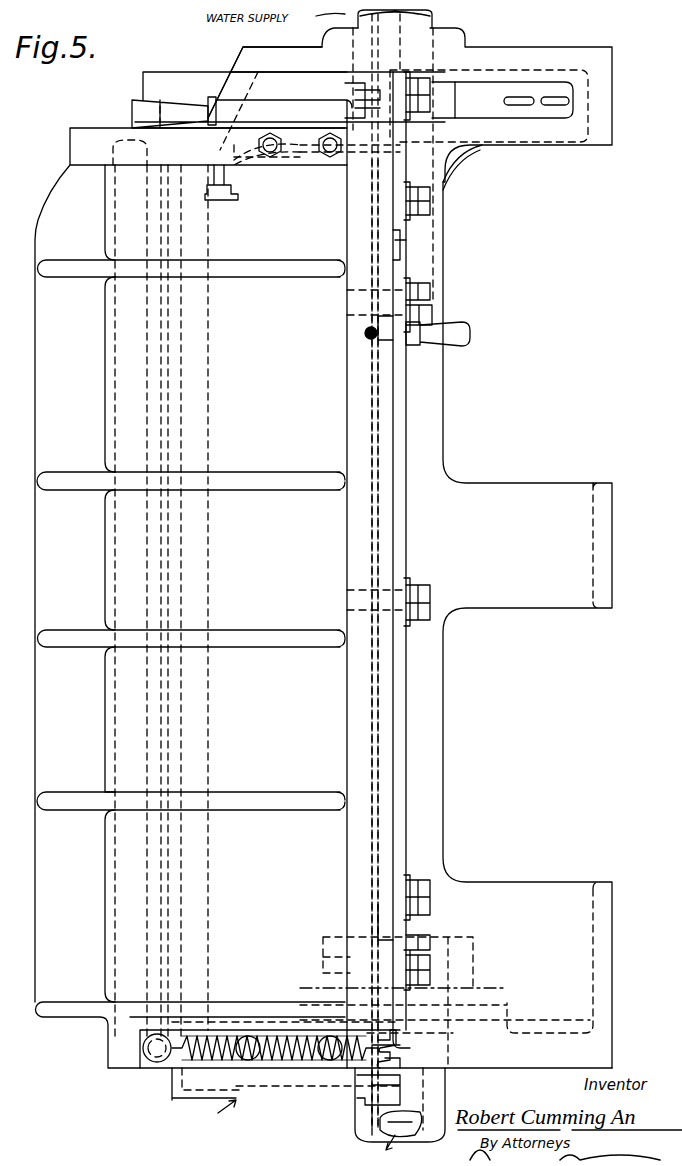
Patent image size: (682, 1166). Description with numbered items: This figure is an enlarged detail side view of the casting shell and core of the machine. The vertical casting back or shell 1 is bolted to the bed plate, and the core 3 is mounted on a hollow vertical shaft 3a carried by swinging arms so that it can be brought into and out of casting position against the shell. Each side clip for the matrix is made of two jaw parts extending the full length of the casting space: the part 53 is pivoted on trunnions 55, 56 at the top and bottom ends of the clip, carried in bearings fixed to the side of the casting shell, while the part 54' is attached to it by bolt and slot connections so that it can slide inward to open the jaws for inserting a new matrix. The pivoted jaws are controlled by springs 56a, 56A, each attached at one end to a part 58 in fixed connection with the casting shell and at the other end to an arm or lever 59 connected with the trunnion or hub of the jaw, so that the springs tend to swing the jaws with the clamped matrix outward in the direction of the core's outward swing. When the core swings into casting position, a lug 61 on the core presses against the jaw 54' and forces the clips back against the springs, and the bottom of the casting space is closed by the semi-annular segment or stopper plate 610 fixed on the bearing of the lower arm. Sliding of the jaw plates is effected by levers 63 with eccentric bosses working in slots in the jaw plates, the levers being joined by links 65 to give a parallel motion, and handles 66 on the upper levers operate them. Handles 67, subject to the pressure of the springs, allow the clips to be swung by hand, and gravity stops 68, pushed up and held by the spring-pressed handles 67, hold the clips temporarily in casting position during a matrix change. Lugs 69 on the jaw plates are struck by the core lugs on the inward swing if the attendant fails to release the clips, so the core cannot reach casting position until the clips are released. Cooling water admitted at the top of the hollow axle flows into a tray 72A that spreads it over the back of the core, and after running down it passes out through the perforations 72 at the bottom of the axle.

The casting back or shell 1 is at (45, 361).
The core 3 is at (243, 62).
The hollow vertical shaft 3a is at (436, 26).
The matrix clip jaw part 53 is at (362, 705).
The matrix clip jaw part 54' is at (416, 245).
The trunnion 55 is at (368, 93).
The trunnion 56 is at (365, 1116).
The spring 56a is at (213, 1060).
The spring 56A is at (268, 1040).
The fixed spring anchoring part 58 is at (160, 1062).
The arm or lever 59 is at (400, 1088).
The lug or projection 61 is at (528, 113).
The semi-annular segment or stopper plate 610 is at (240, 1098).
The lever with eccentric boss 63 is at (385, 318).
The link 65 is at (406, 550).
The handle 66 is at (455, 325).
The handle 67 is at (165, 100).
The stop 68 is at (230, 181).
The lug or projection 69 is at (455, 92).
The lateral perforation 72 is at (509, 1006).
The tray 72A is at (479, 150).